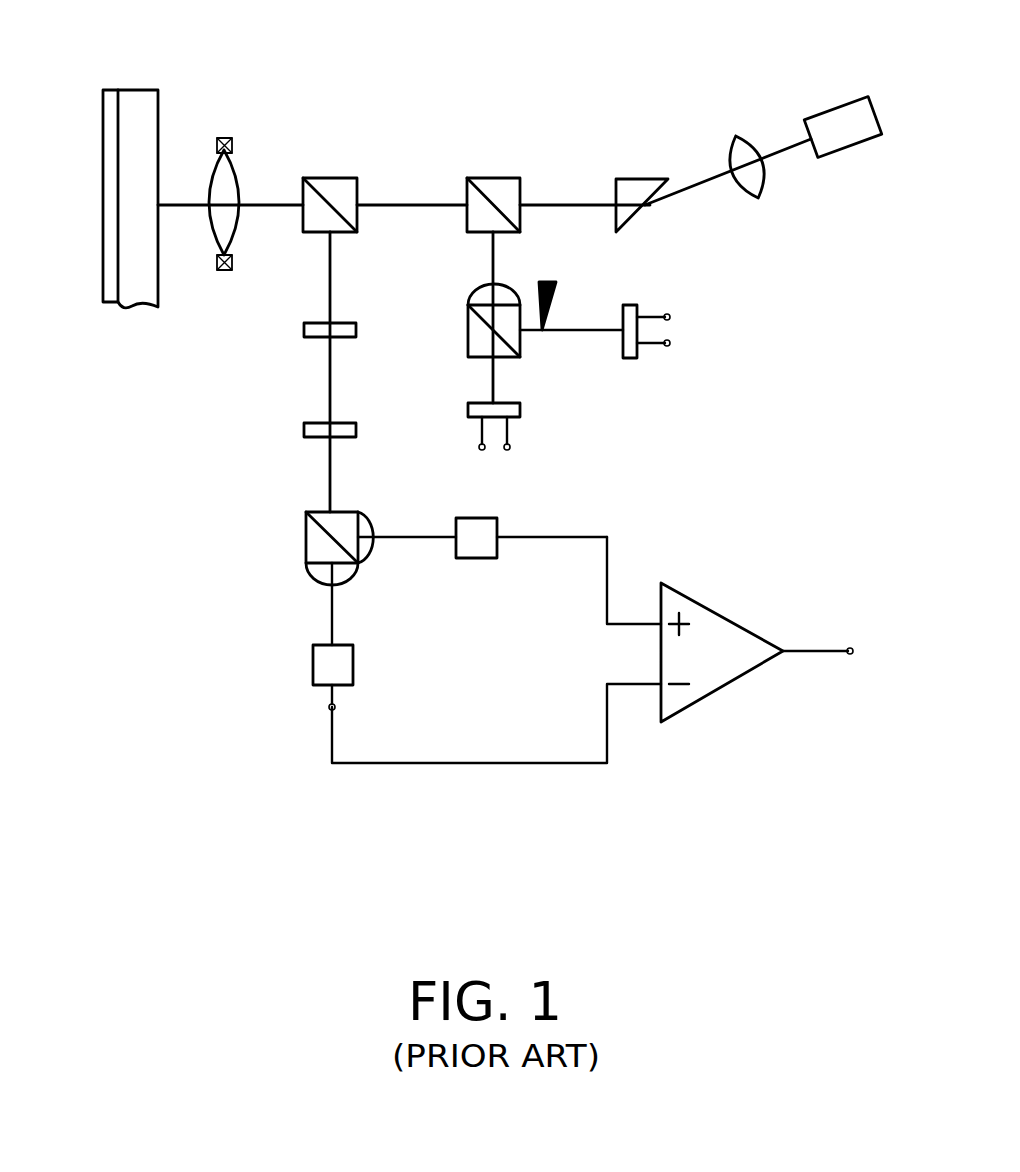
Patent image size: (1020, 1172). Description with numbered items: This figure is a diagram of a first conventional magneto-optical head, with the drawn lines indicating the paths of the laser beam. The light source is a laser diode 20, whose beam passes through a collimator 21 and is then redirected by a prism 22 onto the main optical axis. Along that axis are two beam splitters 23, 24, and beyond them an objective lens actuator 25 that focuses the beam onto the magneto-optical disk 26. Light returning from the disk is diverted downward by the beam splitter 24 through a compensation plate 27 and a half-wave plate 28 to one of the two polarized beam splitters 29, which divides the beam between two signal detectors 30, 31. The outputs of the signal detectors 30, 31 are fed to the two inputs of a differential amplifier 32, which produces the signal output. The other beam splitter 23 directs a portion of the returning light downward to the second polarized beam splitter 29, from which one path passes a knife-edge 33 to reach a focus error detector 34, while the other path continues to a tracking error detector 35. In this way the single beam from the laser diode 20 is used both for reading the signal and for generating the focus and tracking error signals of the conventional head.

The laser diode 20 is at (845, 101).
The collimator 21 is at (763, 186).
The prism 22 is at (645, 178).
The beam splitter 23 is at (510, 178).
The beam splitter 24 is at (340, 178).
The objective lens actuator 25 is at (225, 138).
The magneto-optical disk 26 is at (103, 170).
The compensation plate 27 is at (304, 330).
The half-wave plate 28 is at (304, 431).
The polarized beam splitter 29 is at (468, 320).
The signal detector 30 is at (313, 667).
The signal detector 31 is at (490, 518).
The differential amplifier 32 is at (725, 613).
The knife-edge 33 is at (548, 316).
The focus error detector 34 is at (632, 360).
The tracking error detector 35 is at (468, 410).